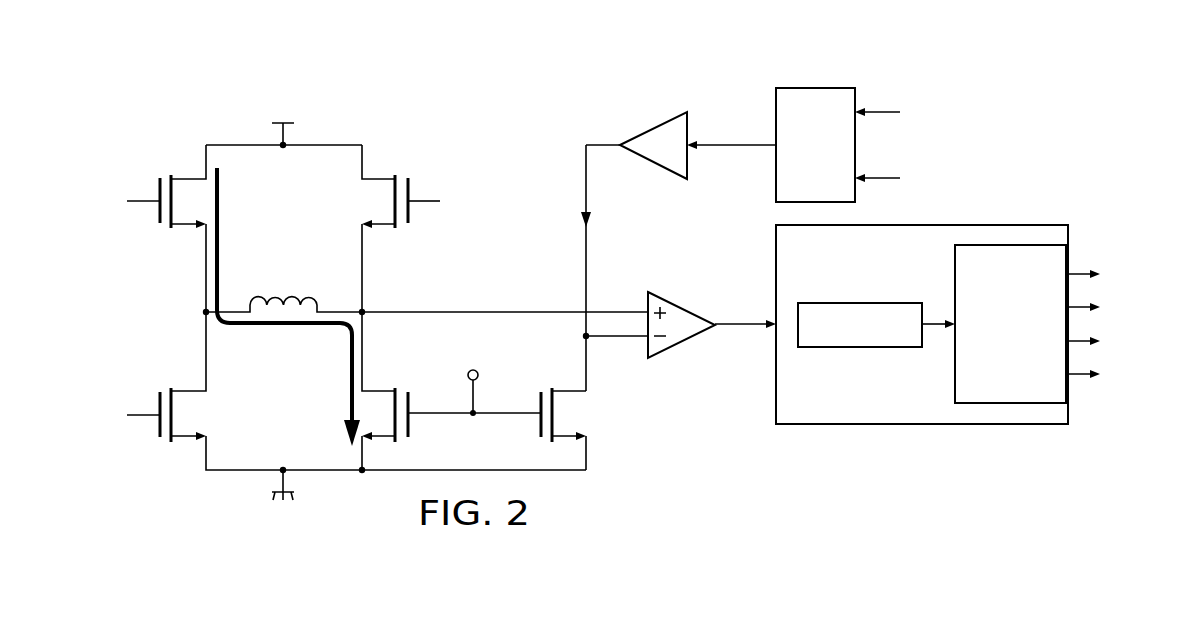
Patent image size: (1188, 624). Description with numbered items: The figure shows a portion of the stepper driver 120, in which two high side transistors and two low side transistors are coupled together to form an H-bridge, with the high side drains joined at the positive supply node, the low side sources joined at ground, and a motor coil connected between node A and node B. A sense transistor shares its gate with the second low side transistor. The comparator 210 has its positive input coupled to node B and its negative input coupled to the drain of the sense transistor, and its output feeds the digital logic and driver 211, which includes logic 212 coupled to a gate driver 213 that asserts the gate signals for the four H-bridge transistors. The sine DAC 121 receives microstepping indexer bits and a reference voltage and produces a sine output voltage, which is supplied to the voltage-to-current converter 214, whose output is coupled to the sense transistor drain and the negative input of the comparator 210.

The stepper driver 120 is at (484, 72).
The sine DAC 121 is at (815, 88).
The comparator 210 is at (683, 341).
The digital logic and driver 211 is at (933, 433).
The logic 212 is at (860, 347).
The gate driver 213 is at (1030, 369).
The voltage-to-current (Vtol) converter 214 is at (652, 129).